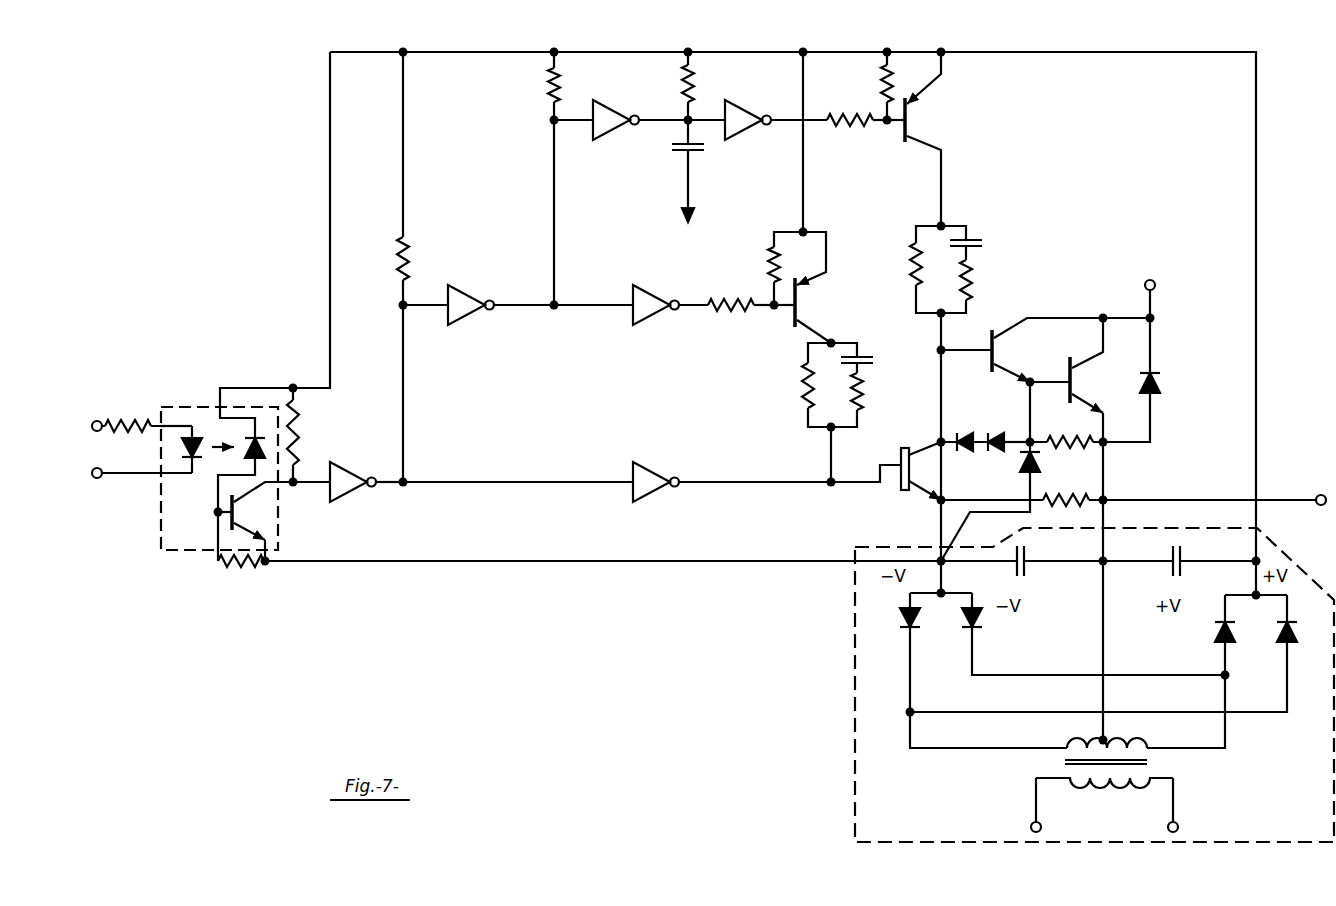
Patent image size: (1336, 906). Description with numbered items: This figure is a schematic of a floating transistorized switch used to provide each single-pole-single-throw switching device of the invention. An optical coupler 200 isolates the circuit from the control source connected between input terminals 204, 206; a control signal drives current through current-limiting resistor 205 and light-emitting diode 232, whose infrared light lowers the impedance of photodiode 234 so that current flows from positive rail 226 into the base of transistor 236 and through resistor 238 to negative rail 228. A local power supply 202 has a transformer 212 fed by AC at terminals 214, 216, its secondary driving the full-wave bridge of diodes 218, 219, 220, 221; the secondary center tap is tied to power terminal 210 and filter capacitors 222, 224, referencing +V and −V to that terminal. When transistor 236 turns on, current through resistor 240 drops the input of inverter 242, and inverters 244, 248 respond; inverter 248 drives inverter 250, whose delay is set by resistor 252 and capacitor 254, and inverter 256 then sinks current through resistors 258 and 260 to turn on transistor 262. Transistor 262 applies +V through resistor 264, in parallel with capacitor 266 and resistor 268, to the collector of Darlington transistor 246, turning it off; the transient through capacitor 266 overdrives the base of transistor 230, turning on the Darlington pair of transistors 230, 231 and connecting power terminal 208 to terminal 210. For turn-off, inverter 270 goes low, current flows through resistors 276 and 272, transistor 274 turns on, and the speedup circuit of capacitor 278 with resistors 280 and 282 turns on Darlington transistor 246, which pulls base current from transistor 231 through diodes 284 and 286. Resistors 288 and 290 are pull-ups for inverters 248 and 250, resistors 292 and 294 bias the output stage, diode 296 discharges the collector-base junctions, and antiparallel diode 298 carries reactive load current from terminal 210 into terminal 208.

The optical coupler 200 is at (176, 406).
The local power supply 202 is at (1094, 685).
The input terminal 204 is at (106, 418).
The current-limiting resistor 205 is at (150, 402).
The input terminal 206 is at (98, 480).
The power terminal 208 is at (1153, 286).
The power terminal 210 is at (1317, 494).
The transformer 212 is at (1062, 768).
The terminal 214 is at (1040, 826).
The terminal 216 is at (1179, 826).
The diode 218 is at (900, 626).
The diode 219 is at (980, 626).
The diode 220 is at (1214, 630).
The diode 221 is at (1295, 632).
The filter capacitor 222 is at (1031, 575).
The filter capacitor 224 is at (1182, 574).
The operating voltage rail 226 is at (622, 52).
The operating voltage rail 228 is at (721, 564).
The transistor 230 is at (1000, 360).
The transistor 231 is at (1073, 388).
The light-emitting diode 232 is at (190, 478).
The photodiode 234 is at (260, 432).
The transistor 236 is at (250, 528).
The resistor 238 is at (232, 568).
The resistor 240 is at (300, 450).
The inverter 242 is at (342, 498).
The inverter 244 is at (650, 464).
The Darlington transistor 246 is at (898, 452).
The inverter 248 is at (470, 294).
The inverter 250 is at (620, 111).
The resistor 252 is at (691, 91).
The capacitor 254 is at (692, 156).
The inverter 256 is at (742, 105).
The resistor 258 is at (891, 74).
The resistor 260 is at (848, 114).
The transistor 262 is at (918, 132).
The resistor 264 is at (912, 264).
The capacitor 266 is at (978, 236).
The resistor 268 is at (974, 292).
The inverter 270 is at (654, 294).
The resistor 272 is at (730, 312).
The transistor 274 is at (801, 310).
The resistor 276 is at (770, 264).
The capacitor 278 is at (858, 358).
The resistor 280 is at (860, 404).
The resistor 282 is at (802, 388).
The diode 284 is at (981, 434).
The diode 286 is at (960, 450).
The resistor 288 is at (407, 266).
The resistor 290 is at (546, 99).
The resistor 292 is at (1068, 440).
The resistor 294 is at (1090, 496).
The diode 296 is at (1042, 460).
The antiparallel diode 298 is at (1151, 374).